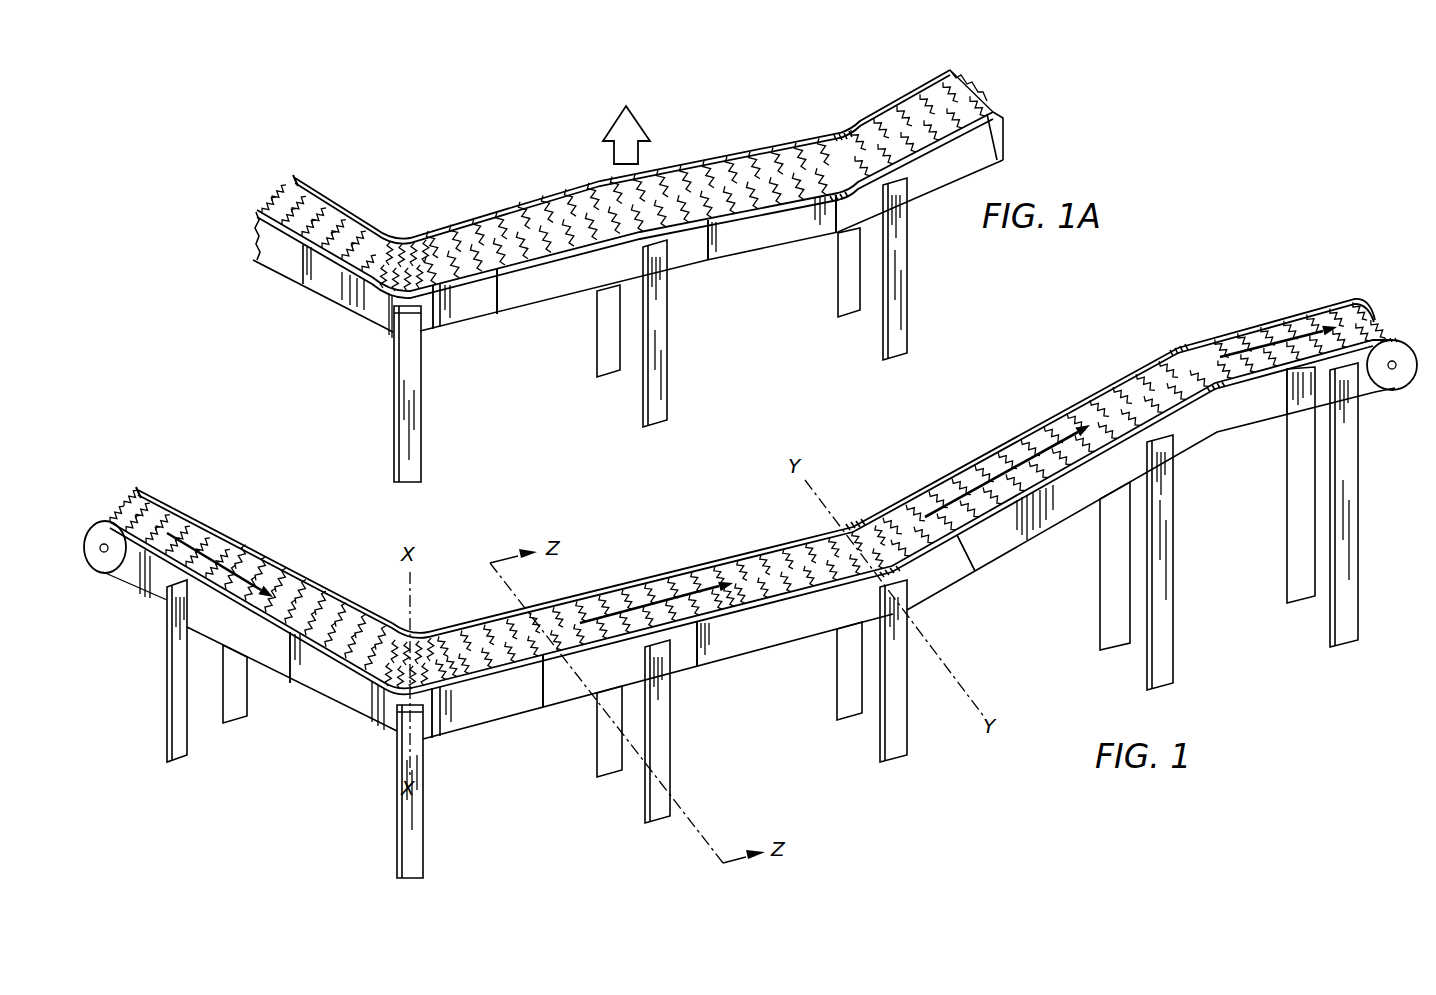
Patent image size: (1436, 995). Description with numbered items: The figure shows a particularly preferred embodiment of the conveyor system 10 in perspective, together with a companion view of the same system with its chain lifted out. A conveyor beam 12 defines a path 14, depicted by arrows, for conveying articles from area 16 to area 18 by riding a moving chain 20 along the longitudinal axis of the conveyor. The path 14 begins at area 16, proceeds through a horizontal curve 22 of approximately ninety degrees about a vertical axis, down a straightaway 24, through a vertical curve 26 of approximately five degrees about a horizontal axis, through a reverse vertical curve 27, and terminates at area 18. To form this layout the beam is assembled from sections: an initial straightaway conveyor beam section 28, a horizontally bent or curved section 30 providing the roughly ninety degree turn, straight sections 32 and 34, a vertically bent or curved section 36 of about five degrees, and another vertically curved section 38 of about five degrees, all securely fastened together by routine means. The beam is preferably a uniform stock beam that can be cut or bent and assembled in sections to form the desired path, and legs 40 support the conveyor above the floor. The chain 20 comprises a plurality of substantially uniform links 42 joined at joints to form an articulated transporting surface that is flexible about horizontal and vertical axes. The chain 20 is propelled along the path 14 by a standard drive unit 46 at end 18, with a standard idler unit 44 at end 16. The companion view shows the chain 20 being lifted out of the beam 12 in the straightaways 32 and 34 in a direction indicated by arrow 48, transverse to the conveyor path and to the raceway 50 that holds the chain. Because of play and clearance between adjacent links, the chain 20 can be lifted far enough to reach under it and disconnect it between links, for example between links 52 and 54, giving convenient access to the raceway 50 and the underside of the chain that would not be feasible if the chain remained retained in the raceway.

In FIG. 1, the conveyor system 10 is at (782, 745).
In FIG. 1A, the conveyor system 10 is at (646, 90).
In FIG. 1, the conveyor beam 12 is at (793, 620).
In FIG. 1A, the conveyor beam 12 is at (690, 262).
In FIG. 1, the path 14 is at (222, 552).
In FIG. 1, the area 16 is at (126, 510).
In FIG. 1, the area 18 is at (1378, 330).
In FIG. 1, the chain 20 is at (320, 613).
In FIG. 1A, the chain 20 is at (500, 235).
In FIG. 1, the horizontal curve 22 is at (400, 630).
In FIG. 1A, the horizontal curve 22 is at (412, 232).
In FIG. 1, the straightaway 24 is at (715, 567).
In FIG. 1, the vertical curve 26 is at (852, 527).
In FIG. 1A, the vertical curve 26 is at (840, 130).
In FIG. 1, the reverse vertical curve 27 is at (1178, 345).
In FIG. 1, the conveyor beam section 28 is at (243, 634).
In FIG. 1, the horizontally bent or curved section 30 is at (493, 712).
In FIG. 1A, the horizontally bent or curved section 30 is at (465, 322).
In FIG. 1, the straight section 32 is at (623, 678).
In FIG. 1A, the straight section 32 is at (598, 285).
In FIG. 1, the straight section 34 is at (755, 643).
In FIG. 1A, the straight section 34 is at (775, 238).
In FIG. 1, the vertically bent or curved section 36 is at (946, 585).
In FIG. 1A, the vertically bent or curved section 36 is at (957, 182).
In FIG. 1, the vertically curved section 38 is at (1240, 425).
In FIG. 1, the legs 40 is at (237, 723).
In FIG. 1A, the legs 40 is at (394, 413).
In FIG. 1, the links 42 is at (457, 637).
In FIG. 1, the idler unit 44 is at (113, 563).
In FIG. 1, the drive unit 46 is at (1394, 373).
In FIG. 1A, the arrow 48 is at (596, 120).
In FIG. 1A, the raceway 50 is at (572, 253).
In FIG. 1A, the link 52 is at (684, 165).
In FIG. 1A, the link 54 is at (712, 168).